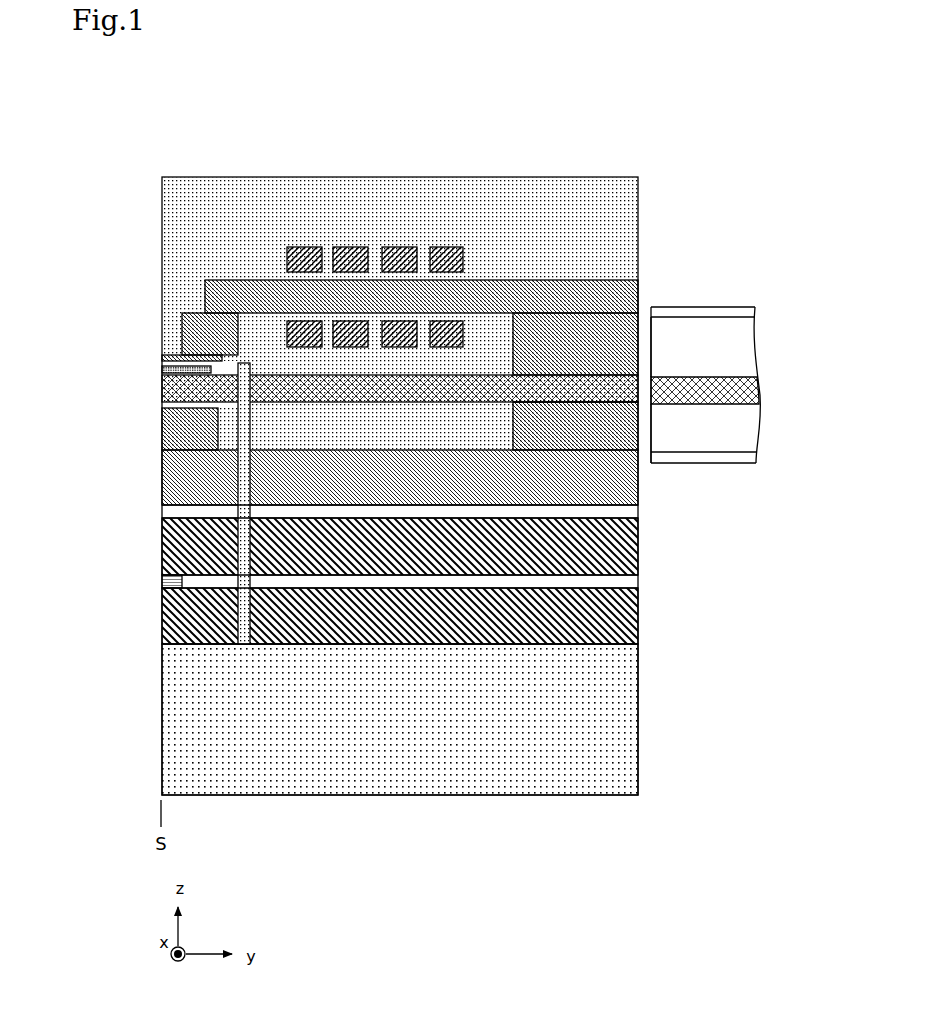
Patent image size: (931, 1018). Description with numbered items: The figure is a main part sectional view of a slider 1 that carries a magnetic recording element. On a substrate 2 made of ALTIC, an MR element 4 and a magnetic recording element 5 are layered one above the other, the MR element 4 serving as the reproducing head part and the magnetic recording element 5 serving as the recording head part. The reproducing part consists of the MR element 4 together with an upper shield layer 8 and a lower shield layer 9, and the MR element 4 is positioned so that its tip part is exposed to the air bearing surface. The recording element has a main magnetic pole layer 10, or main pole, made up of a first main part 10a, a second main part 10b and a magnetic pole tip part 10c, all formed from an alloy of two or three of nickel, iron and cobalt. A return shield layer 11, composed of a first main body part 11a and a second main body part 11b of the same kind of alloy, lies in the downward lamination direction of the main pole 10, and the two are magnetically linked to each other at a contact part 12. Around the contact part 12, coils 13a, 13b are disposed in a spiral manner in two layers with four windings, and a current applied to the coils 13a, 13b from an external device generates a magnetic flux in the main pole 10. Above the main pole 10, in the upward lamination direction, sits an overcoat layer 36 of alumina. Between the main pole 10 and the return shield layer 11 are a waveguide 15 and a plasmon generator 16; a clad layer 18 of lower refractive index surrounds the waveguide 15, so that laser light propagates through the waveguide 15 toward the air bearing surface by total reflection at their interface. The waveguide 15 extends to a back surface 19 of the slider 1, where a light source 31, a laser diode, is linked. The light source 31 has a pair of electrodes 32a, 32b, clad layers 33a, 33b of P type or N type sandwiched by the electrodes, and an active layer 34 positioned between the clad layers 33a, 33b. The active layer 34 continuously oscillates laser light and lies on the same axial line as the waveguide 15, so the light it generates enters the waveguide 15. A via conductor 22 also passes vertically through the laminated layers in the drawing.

The slider 1 is at (513, 158).
The substrate 2 is at (639, 728).
The MR element 4 is at (162, 582).
The magnetic recording element 5 is at (85, 393).
The upper shield layer 8 is at (639, 556).
The lower shield layer 9 is at (639, 623).
The main magnetic pole layer 10 is at (58, 233).
The first main part 10a is at (203, 280).
The second main part 10b is at (182, 318).
The magnetic pole tip part 10c is at (162, 357).
The return shield layer 11 is at (62, 420).
The first main body part 11a is at (162, 466).
The second main body part 11b is at (162, 428).
The contact part 12 is at (590, 352).
The coil 13a is at (300, 247).
The coil 13b is at (292, 322).
The waveguide 15 is at (162, 390).
The plasmon generator 16 is at (162, 369).
The clad layer 18 is at (333, 367).
The back surface 19 is at (639, 398).
The connecting via conductor 22 is at (188, 538).
The light source 31 is at (737, 268).
The electrode 32a is at (756, 311).
The electrode 32b is at (757, 459).
The clad layer 33a is at (757, 348).
The clad layer 33b is at (759, 433).
The active layer 34 is at (761, 389).
The overcoat layer 36 is at (363, 192).